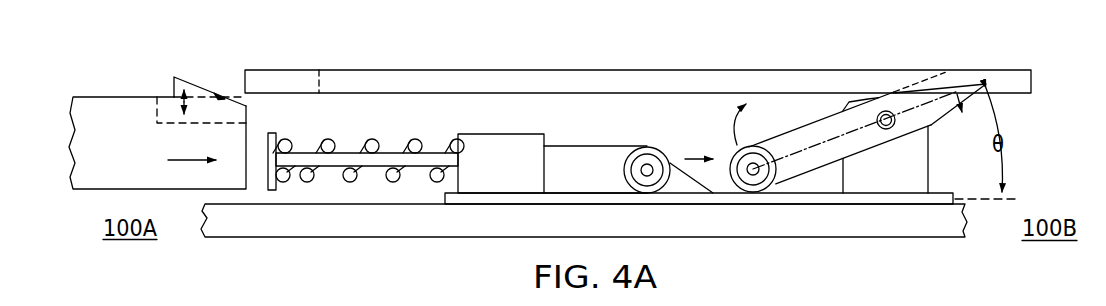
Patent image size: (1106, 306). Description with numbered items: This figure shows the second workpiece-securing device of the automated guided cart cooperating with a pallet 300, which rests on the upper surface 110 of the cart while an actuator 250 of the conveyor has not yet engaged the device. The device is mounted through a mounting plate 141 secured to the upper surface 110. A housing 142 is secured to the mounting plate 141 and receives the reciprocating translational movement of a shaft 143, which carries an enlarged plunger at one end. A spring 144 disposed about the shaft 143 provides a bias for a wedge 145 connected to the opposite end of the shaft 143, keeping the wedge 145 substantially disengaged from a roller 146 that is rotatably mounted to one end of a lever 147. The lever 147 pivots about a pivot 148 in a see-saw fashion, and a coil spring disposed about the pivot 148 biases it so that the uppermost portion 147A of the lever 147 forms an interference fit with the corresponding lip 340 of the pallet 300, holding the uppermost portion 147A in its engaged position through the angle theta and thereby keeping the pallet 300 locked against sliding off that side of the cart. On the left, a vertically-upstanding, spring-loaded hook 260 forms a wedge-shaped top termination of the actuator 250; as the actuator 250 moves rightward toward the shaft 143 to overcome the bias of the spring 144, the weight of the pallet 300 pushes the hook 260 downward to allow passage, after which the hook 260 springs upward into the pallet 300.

The actuator 250 is at (118, 97).
The hook 260 is at (175, 78).
The pallet 300 is at (452, 70).
The lip 340 is at (325, 83).
The shaft 143 is at (300, 125).
The spring 144 is at (332, 138).
The housing 142 is at (507, 148).
The wedge 145 is at (597, 162).
The roller 146 is at (755, 192).
The lever 147 is at (797, 143).
The uppermost portion of lever 147A is at (955, 75).
The pivot 148 is at (895, 123).
The mounting plate 141 is at (488, 205).
The upper surface 110 is at (880, 238).